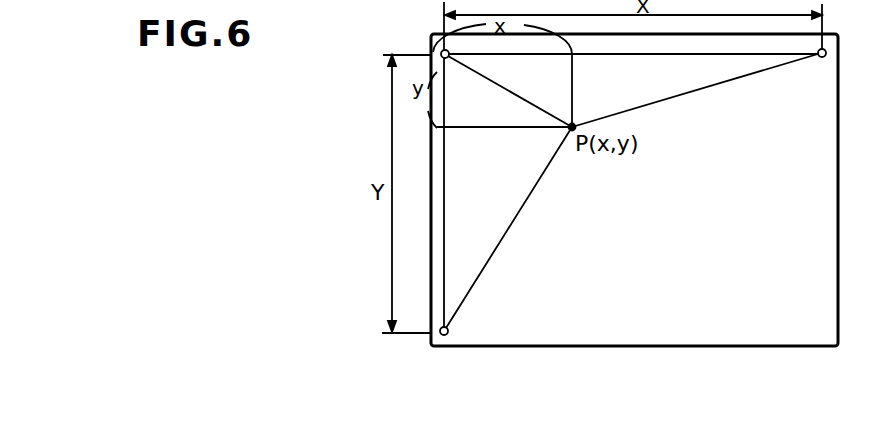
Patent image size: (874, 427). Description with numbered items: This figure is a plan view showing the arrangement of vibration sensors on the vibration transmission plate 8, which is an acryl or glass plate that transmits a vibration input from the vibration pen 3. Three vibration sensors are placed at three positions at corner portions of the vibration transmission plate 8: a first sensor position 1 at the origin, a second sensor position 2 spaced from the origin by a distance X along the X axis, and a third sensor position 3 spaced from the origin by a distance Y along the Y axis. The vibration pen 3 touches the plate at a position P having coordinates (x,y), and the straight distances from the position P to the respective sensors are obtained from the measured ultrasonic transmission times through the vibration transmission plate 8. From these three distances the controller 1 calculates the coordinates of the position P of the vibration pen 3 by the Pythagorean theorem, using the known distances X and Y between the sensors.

The vibration transmission plate 8 is at (838, 207).
The controller 1 is at (455, 76).
The sensor s2 at (X,0) with distance d2 2 is at (701, 90).
The vibration pen 3 is at (506, 236).